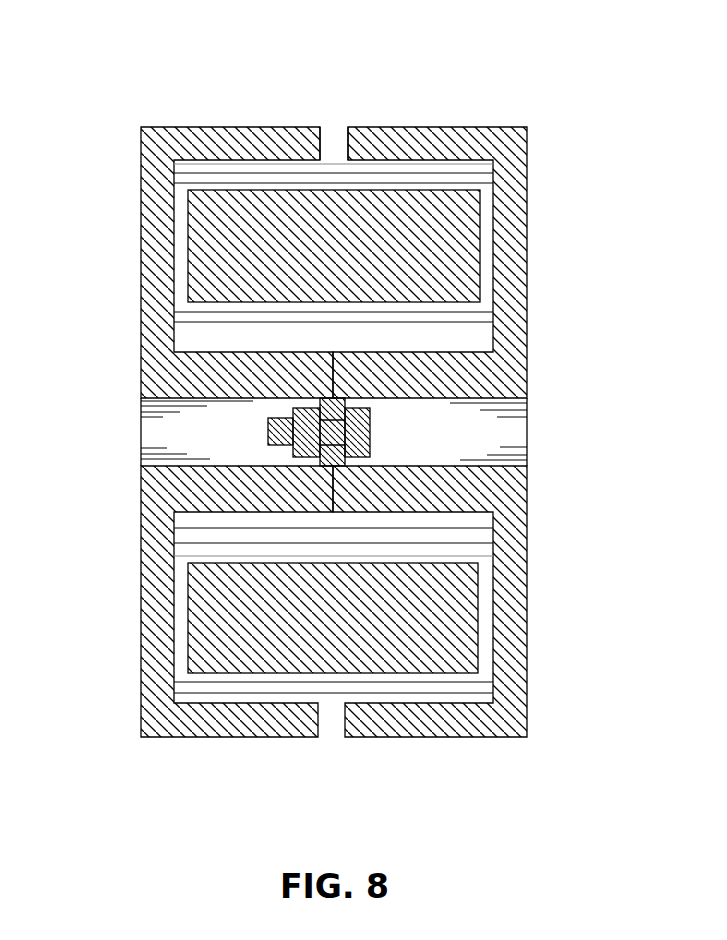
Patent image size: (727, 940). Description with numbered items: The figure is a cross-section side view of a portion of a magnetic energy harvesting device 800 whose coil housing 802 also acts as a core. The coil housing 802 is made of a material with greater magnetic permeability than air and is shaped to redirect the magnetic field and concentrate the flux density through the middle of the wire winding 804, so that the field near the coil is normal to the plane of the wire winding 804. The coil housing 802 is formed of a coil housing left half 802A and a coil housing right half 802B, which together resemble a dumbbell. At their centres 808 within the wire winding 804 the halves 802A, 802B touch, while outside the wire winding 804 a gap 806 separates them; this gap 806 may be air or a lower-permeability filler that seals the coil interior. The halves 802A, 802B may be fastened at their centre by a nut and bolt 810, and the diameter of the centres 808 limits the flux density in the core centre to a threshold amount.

The magnetic energy harvesting device 800 is at (185, 98).
The coil housing 802 is at (141, 328).
The coil housing left half 802A is at (185, 737).
The coil housing right half 802B is at (477, 737).
The wire winding 804 is at (480, 230).
The gap 806 is at (327, 108).
The centres of the halves 808 is at (333, 378).
The nut and bolt 810 is at (370, 428).